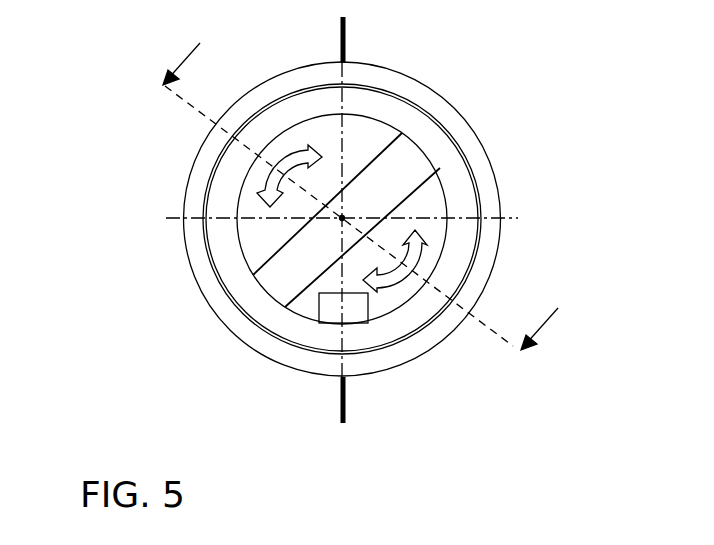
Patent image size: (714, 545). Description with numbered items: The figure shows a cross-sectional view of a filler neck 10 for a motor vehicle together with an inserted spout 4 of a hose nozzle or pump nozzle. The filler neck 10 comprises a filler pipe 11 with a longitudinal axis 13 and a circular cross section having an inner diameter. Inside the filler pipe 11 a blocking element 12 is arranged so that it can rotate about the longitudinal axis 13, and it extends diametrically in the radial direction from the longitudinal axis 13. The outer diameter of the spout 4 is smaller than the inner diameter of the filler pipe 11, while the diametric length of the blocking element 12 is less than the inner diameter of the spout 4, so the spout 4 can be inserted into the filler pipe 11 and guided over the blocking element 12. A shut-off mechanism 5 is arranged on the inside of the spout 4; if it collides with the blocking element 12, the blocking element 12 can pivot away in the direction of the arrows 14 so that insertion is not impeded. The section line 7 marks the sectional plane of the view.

The spout 4 is at (461, 262).
The shut-off mechanism 5 is at (331, 315).
The section line VII-VII 7 is at (186, 59).
The filler neck 10 is at (470, 77).
The filler pipe 11 is at (490, 193).
The blocking element 12 is at (415, 163).
The longitudinal axis 13 is at (342, 218).
The arrows 14 is at (289, 161).